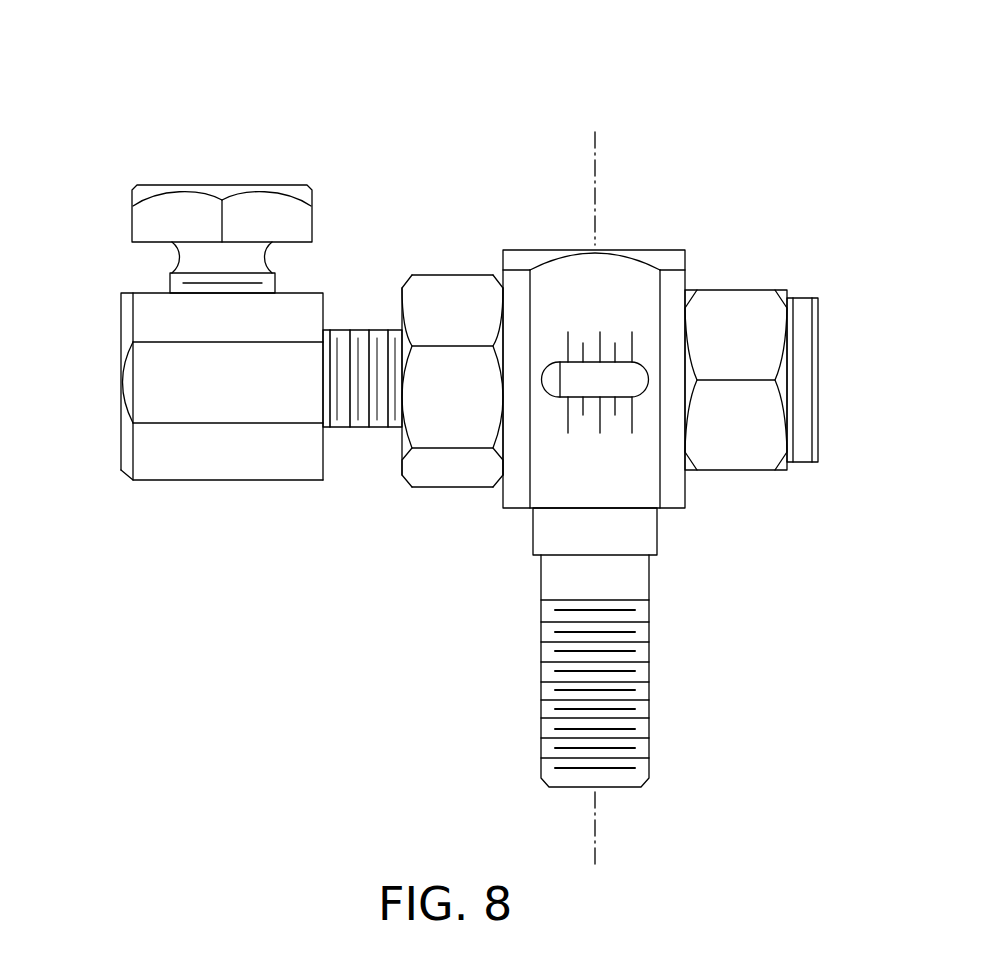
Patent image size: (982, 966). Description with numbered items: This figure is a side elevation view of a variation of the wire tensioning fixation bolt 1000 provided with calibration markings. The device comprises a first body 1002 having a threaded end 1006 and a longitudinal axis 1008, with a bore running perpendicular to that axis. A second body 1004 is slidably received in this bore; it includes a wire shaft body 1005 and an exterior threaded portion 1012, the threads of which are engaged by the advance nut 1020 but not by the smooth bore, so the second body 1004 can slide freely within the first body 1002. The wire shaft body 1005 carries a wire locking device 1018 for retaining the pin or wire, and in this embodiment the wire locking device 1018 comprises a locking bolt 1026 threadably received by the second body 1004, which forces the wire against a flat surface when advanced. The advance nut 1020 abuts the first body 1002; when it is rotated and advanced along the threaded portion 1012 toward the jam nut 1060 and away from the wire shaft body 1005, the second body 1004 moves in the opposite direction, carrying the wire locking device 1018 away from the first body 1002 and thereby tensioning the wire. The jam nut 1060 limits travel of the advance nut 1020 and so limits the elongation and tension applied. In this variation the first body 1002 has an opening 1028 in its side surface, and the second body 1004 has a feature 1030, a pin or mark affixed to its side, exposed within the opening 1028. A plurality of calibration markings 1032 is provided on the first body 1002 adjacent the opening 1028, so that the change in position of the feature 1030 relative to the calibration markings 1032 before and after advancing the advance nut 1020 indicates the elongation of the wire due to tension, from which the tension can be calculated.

The wire tensioning fixation bolt 1000 is at (478, 92).
The first body 1002 is at (657, 240).
The second body 1004 is at (318, 286).
The wire shaft body 1005 is at (253, 482).
The threaded end 1006 is at (645, 653).
The longitudinal axis 1008 is at (593, 183).
The threaded portion 1012 is at (357, 428).
The wire locking device 1018 is at (252, 176).
The advance nut 1020 is at (433, 470).
The locking bolt 1026 is at (168, 287).
The opening 1028 is at (640, 398).
The feature 1030 is at (561, 378).
The calibration markings 1032 is at (568, 360).
The jam nut 1060 is at (720, 288).